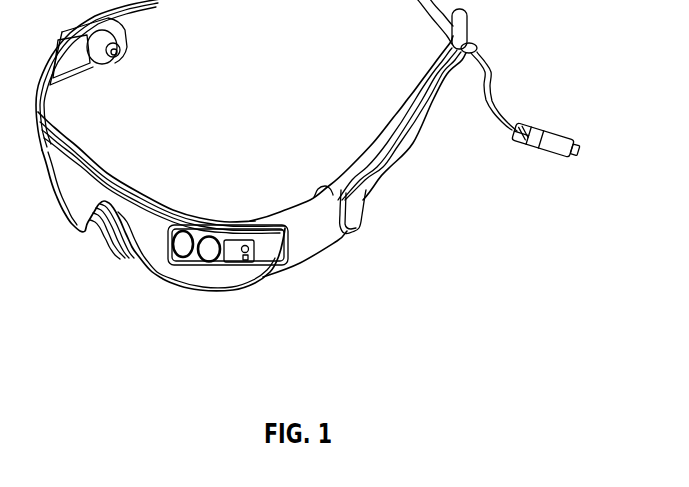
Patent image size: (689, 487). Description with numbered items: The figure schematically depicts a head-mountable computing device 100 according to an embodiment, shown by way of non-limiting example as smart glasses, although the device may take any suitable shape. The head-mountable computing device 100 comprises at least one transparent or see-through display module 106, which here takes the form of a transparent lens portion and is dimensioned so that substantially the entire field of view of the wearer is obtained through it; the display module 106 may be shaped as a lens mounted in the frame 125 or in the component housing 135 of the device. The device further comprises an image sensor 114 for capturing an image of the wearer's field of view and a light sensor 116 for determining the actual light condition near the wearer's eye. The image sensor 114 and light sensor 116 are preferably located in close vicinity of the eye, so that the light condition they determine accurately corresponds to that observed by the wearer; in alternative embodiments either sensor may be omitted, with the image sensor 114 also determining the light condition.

The head-mountable computing device 100 is at (308, 400).
The display module 106 is at (173, 277).
The image sensor 114 is at (185, 243).
The light sensor 116 is at (212, 248).
The frame 125 is at (418, 117).
The component housing 135 is at (325, 235).